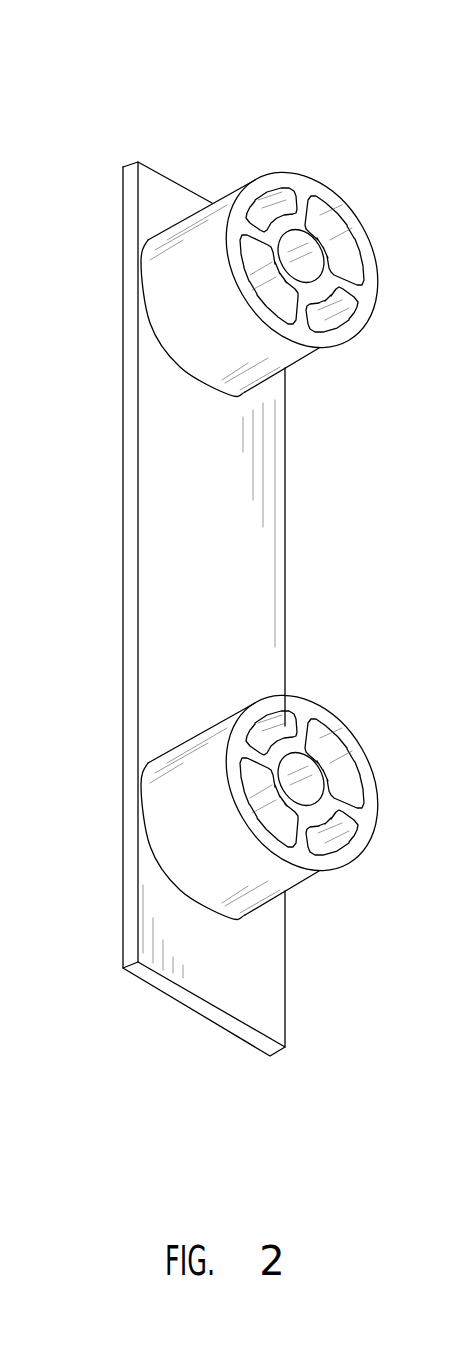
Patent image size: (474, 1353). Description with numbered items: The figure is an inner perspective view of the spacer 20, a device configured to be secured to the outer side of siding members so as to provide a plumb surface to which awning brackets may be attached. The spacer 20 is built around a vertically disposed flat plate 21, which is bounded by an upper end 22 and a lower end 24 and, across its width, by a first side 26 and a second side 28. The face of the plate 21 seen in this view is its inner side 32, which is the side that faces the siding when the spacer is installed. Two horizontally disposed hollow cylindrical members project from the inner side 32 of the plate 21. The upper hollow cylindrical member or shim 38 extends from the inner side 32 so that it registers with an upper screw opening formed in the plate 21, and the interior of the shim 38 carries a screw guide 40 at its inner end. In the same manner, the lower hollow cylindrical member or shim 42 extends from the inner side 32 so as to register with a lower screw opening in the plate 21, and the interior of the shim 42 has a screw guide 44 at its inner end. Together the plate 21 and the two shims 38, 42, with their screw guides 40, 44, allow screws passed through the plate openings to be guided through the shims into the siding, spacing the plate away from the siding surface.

The spacer 20 is at (218, 149).
The flat plate 21 is at (255, 508).
The upper end 22 is at (165, 172).
The lower end 24 is at (190, 1040).
The first side 26 is at (285, 538).
The second side 28 is at (123, 610).
The inner side 32 is at (188, 632).
The upper hollow cylindrical member or shim 38 is at (291, 156).
The screw guide 40 is at (298, 252).
The lower hollow cylindrical member or shim 42 is at (331, 690).
The screw guide 44 is at (302, 775).